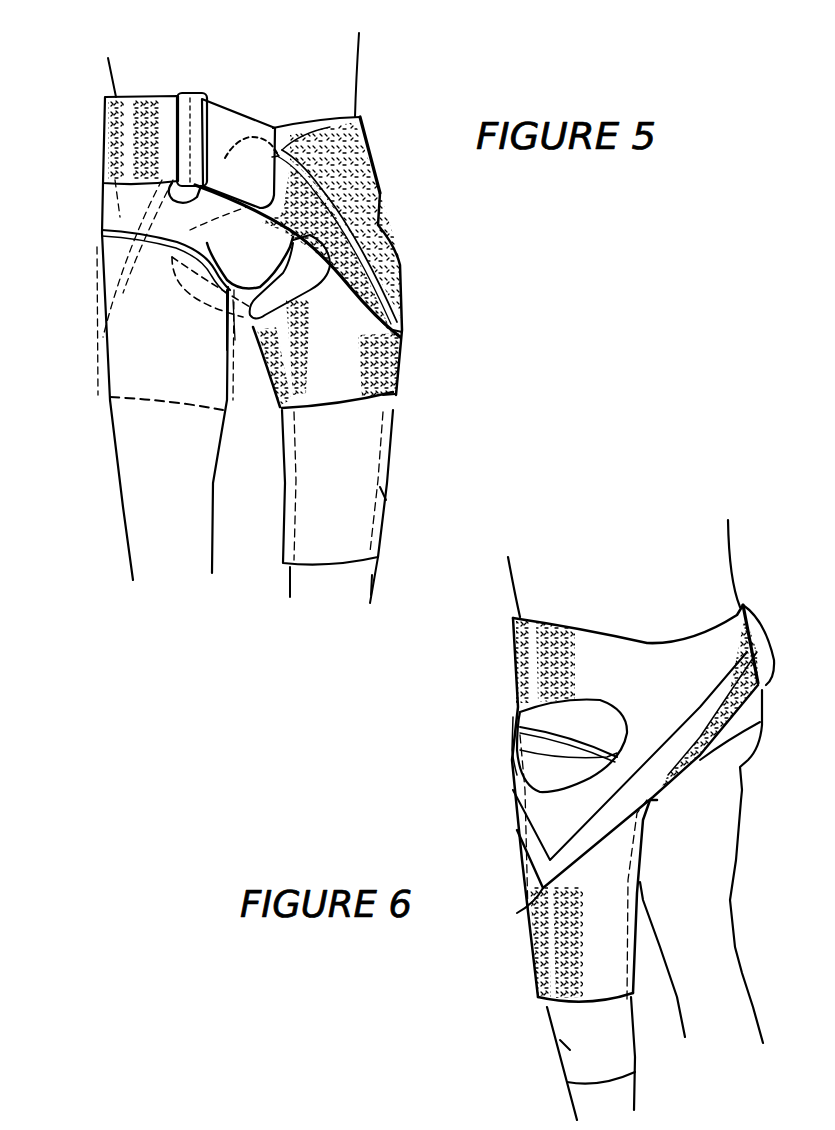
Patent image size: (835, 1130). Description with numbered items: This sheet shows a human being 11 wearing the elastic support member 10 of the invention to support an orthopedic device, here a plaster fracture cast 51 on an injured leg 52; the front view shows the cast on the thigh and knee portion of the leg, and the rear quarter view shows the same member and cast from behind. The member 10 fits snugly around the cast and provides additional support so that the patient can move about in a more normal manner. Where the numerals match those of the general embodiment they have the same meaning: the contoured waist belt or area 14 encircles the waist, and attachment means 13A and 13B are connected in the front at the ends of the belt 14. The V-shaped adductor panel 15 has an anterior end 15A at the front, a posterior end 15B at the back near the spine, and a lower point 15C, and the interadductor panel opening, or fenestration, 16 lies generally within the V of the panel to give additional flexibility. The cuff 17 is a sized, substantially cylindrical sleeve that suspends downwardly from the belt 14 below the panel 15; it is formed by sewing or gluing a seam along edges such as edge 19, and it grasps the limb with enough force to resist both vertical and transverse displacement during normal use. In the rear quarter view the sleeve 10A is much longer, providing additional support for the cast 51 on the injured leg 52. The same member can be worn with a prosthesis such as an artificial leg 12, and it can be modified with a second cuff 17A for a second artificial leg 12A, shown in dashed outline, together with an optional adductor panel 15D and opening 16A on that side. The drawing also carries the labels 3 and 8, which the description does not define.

In FIG. 6, the section line 3- 3 is at (592, 789).
In FIG. 5, the lower hem of thigh section 8 is at (397, 397).
In FIG. 5, the elastic support member 10 is at (400, 278).
In FIG. 6, the elastic support member 10 is at (585, 633).
In FIG. 6, the sleeve 10A is at (532, 947).
In FIG. 5, the human being 11 is at (354, 80).
In FIG. 6, the human being 11 is at (730, 560).
In FIG. 5, the artificial leg 12 is at (387, 445).
In FIG. 5, the artificial leg 12A is at (95, 252).
In FIG. 5, the attachment means 13A is at (243, 117).
In FIG. 5, the attachment means 13B is at (180, 116).
In FIG. 5, the contoured waist belt 14 is at (99, 97).
In FIG. 6, the contoured waist belt 14 is at (502, 617).
In FIG. 5, the V-shaped adductor panel 15 is at (385, 298).
In FIG. 5, the anterior end 15A is at (282, 150).
In FIG. 5, the posterior end 15B is at (244, 159).
In FIG. 6, the posterior end 15B is at (740, 622).
In FIG. 5, the lower point 15C is at (400, 328).
In FIG. 6, the lower point 15C is at (517, 913).
In FIG. 5, the adductor panel 15D is at (108, 325).
In FIG. 5, the interadductor panel opening 16 is at (398, 192).
In FIG. 6, the interadductor panel opening 16 is at (550, 723).
In FIG. 5, the opening 16A is at (91, 185).
In FIG. 5, the cuff 17 is at (400, 335).
In FIG. 6, the cuff 17 is at (506, 798).
In FIG. 5, the second cuff 17A is at (108, 392).
In FIG. 5, the edge 19 is at (248, 335).
In FIG. 5, the plaster fracture cast 51 is at (380, 487).
In FIG. 6, the plaster fracture cast 51 is at (567, 1045).
In FIG. 5, the injured leg 52 is at (372, 583).
In FIG. 6, the injured leg 52 is at (635, 1090).